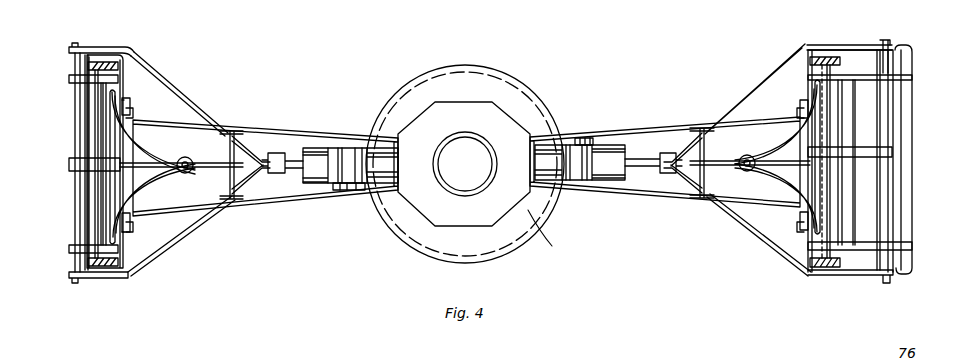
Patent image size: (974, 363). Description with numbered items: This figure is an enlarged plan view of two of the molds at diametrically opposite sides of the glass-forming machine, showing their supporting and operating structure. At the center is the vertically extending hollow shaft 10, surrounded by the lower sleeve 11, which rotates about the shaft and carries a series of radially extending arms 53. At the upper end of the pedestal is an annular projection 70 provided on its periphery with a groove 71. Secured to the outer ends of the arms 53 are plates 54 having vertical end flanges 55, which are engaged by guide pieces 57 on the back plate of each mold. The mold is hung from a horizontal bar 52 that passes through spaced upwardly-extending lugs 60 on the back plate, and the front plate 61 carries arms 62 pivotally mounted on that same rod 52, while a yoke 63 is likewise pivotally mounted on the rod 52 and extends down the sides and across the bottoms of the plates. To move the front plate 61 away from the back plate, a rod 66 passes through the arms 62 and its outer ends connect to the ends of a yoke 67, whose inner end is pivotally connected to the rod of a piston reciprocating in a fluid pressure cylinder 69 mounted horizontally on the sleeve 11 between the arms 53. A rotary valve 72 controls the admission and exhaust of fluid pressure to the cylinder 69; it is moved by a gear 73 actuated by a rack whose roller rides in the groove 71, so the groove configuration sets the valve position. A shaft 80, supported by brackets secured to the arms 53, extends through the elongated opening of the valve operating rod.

The hollow shaft 10 is at (478, 192).
The lower sleeve 11 is at (468, 112).
The horizontal bar 52 is at (128, 112).
The radially extending arms 53 is at (283, 202).
The plates 54 is at (125, 212).
The vertical end flanges 55 is at (130, 118).
The guide pieces 57 is at (125, 104).
The lugs 60 is at (95, 70).
The front plate 61 is at (870, 197).
The arms 62 is at (75, 80).
The yoke 63 is at (112, 60).
The rod 66 is at (75, 50).
The yoke 67 is at (200, 110).
The fluid pressure cylinder 69 is at (372, 176).
The annular projection 70 is at (548, 231).
The groove 71 is at (548, 120).
The rotary valve 72 is at (345, 150).
The gear 73 is at (346, 192).
The shaft 80 is at (240, 136).